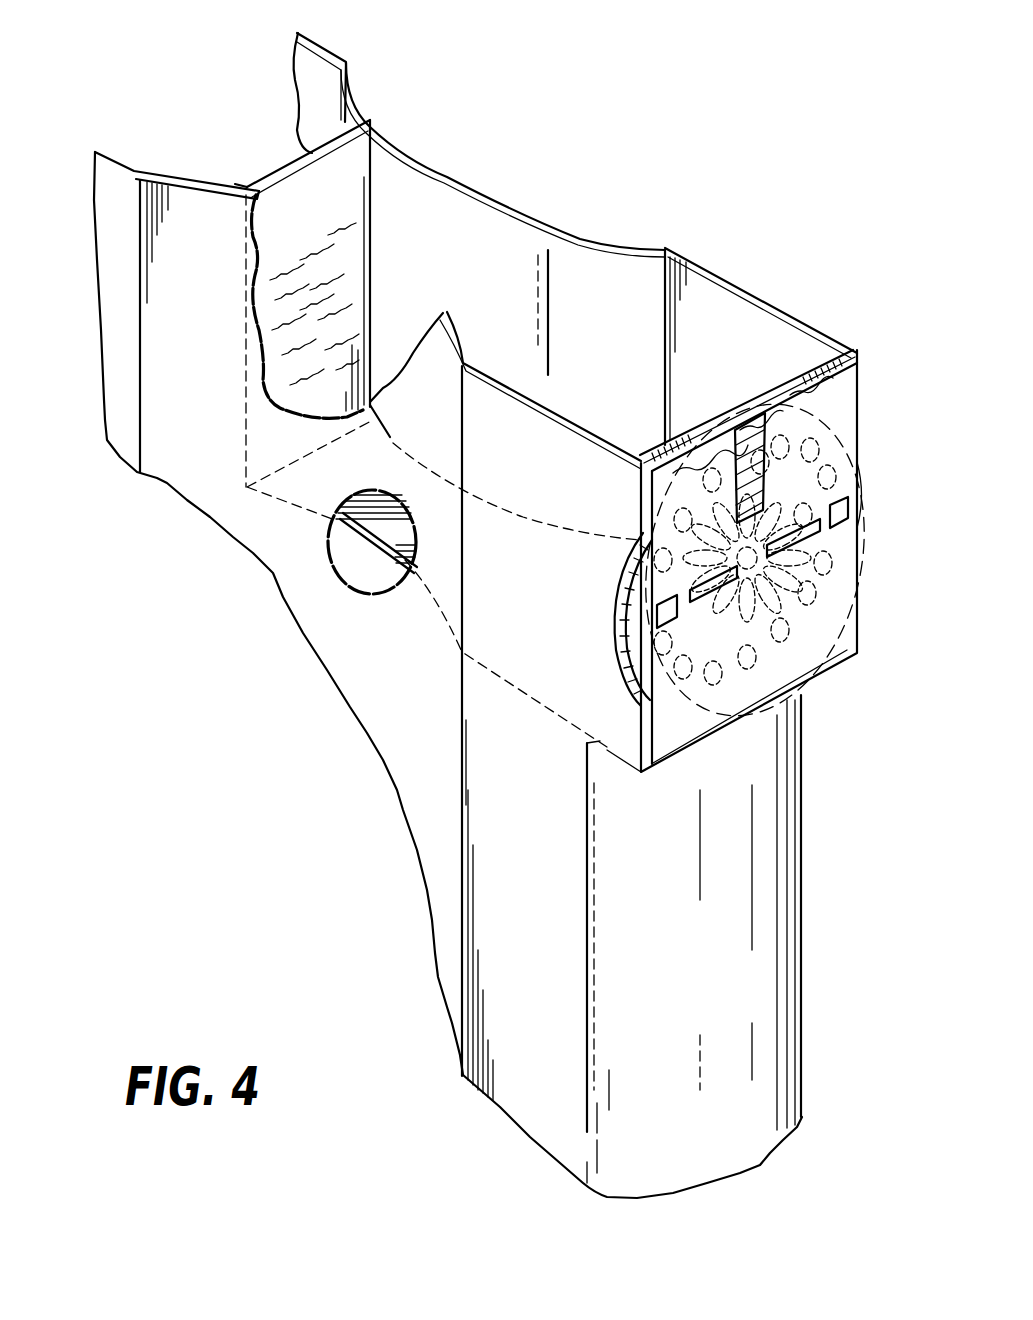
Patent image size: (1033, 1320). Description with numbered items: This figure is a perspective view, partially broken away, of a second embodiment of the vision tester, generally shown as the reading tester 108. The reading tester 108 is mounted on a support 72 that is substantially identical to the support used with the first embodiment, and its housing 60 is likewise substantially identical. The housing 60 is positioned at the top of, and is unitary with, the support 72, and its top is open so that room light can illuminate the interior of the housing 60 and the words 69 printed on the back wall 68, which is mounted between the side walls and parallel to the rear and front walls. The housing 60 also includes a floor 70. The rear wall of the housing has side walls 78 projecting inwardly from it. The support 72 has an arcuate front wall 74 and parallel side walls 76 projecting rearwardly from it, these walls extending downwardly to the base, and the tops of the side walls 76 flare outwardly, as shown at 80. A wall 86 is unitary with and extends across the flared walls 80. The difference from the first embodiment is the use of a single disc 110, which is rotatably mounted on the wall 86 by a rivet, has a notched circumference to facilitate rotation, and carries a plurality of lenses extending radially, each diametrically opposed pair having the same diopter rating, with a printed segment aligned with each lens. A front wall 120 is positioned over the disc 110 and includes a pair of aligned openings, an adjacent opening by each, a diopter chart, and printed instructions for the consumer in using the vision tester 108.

The housing 60 is at (500, 203).
The back wall 68 is at (325, 214).
The words 69 is at (345, 335).
The floor 70 is at (408, 572).
The support 72 is at (306, 644).
The arcuate front wall 74 is at (695, 1017).
The side walls 76 is at (524, 933).
The side walls 78 is at (117, 164).
The flared walls 80 is at (527, 410).
The wall 86 is at (701, 424).
The reading tester 108 is at (686, 246).
The disc 110 is at (626, 592).
The front wall 120 is at (832, 647).